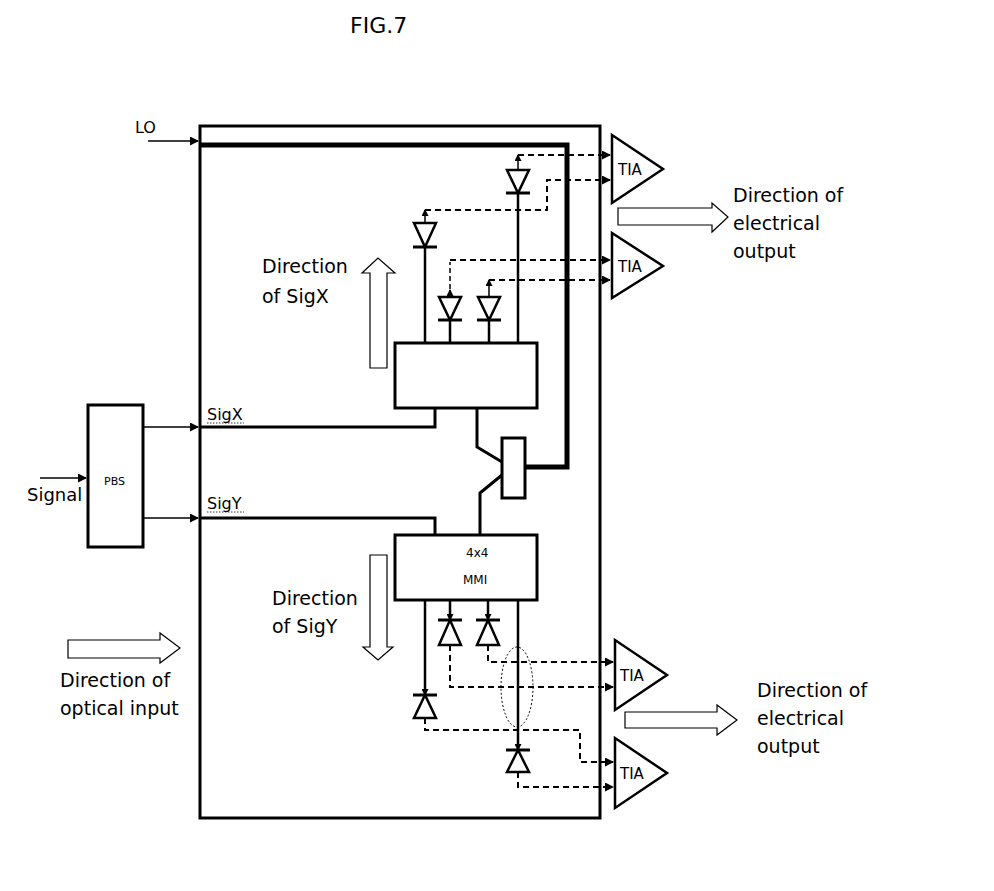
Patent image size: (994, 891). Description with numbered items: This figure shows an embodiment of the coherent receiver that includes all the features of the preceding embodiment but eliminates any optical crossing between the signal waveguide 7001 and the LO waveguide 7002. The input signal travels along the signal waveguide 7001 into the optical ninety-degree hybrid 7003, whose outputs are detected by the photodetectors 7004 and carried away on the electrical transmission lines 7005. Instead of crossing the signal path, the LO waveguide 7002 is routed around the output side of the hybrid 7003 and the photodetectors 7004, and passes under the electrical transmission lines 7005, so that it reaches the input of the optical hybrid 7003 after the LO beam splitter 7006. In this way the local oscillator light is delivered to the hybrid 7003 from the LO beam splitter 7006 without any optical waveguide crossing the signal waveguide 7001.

The signal waveguide 7001 is at (295, 421).
The LO waveguide 7002 is at (287, 152).
The 90° hybrid 7003 is at (537, 388).
The photodetectors 7004 is at (425, 208).
The electrical transmission lines 7005 is at (522, 162).
The LO beam splitter 7006 is at (528, 487).